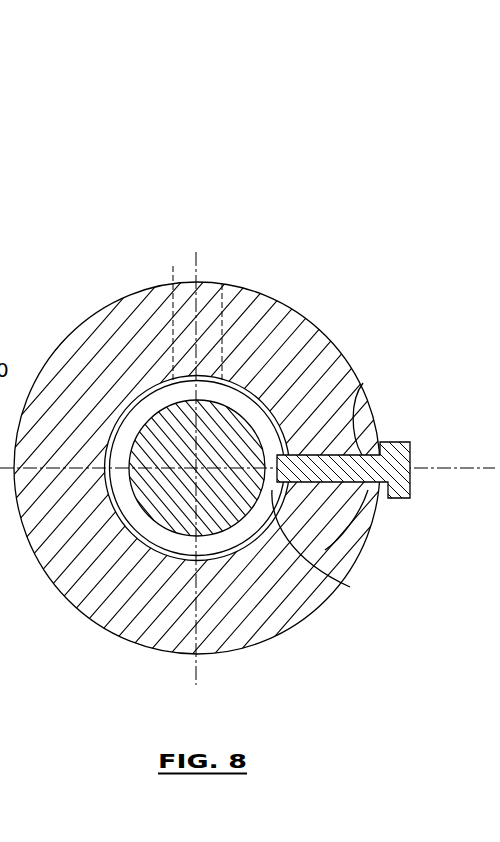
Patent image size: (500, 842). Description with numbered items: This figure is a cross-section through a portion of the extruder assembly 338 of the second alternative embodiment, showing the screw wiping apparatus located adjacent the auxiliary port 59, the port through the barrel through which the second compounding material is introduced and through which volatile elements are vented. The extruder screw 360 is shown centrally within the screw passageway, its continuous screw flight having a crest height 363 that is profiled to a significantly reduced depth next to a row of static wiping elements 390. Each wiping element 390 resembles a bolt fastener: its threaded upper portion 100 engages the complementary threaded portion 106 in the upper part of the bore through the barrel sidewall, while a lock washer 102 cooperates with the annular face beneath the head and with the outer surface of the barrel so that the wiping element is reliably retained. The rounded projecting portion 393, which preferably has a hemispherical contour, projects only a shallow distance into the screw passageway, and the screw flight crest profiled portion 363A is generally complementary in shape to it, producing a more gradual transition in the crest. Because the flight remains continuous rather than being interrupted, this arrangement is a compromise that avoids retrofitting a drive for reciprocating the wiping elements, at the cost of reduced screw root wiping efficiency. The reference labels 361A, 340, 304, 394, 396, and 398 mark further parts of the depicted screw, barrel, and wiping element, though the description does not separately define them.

The extruder assembly 338 is at (193, 197).
The auxiliary port 59 is at (173, 266).
The lobe surface 361A is at (230, 377).
The sleeve 340 is at (257, 407).
The extruder screw 360 is at (283, 317).
The projecting portion 393 is at (220, 420).
The recess 304 is at (363, 383).
The threaded portion 106 is at (383, 442).
The pin head 394 is at (415, 441).
The static wiping element 390 is at (411, 452).
The pin flange 396 is at (412, 478).
The lock washer 102 is at (410, 498).
The threaded upper portion 100 is at (387, 500).
The pin shaft 398 is at (373, 505).
The screw flight crest profiled portion 363A is at (345, 583).
The screw flight crest height 363 is at (300, 618).